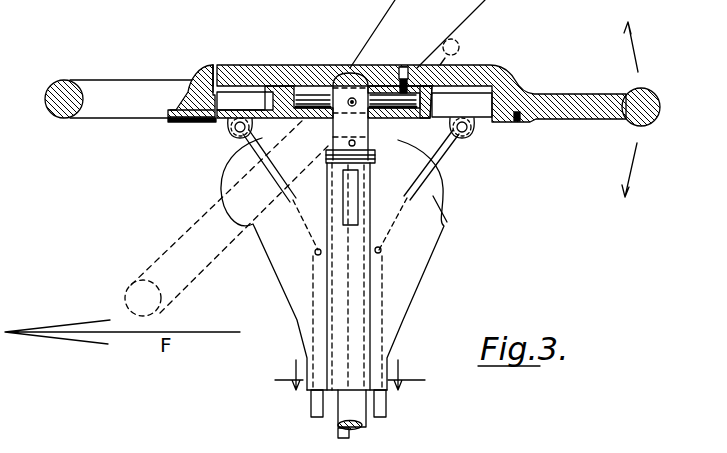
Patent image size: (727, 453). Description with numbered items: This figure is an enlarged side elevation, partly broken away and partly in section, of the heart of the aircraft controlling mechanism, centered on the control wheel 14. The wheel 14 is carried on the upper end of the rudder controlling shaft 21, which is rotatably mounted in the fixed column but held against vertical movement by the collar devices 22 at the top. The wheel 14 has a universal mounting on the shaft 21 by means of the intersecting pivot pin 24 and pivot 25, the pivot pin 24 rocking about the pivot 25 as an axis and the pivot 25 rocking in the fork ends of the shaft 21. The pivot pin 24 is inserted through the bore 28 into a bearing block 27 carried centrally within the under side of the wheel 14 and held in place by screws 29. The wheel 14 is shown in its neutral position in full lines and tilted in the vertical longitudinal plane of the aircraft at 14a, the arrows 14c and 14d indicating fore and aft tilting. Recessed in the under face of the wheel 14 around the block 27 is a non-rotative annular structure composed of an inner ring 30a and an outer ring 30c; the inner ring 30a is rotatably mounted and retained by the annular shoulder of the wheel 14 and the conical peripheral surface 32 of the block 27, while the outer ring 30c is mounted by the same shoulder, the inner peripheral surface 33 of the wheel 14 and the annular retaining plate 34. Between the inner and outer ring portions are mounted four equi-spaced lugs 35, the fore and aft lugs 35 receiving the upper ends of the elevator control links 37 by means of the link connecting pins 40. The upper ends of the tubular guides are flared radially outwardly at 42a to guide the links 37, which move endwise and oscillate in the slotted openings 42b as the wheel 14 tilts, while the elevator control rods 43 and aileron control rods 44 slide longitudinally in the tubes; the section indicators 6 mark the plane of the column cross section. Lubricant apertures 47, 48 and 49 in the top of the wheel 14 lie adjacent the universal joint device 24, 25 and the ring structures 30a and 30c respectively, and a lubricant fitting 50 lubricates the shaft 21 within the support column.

The wheel 14 is at (78, 88).
The wheel tilted in the vertical longitudinal plane 14a is at (138, 280).
The arrow indicating fore and aft tilting 14c is at (636, 60).
The arrow indicating fore and aft tilting 14d is at (630, 178).
The rudder controlling shaft 21 is at (333, 131).
The collar devices 22 is at (376, 160).
The pivot pin 24 is at (298, 66).
The pivot 25 is at (355, 70).
The bearing block 27 is at (404, 66).
The bore 28 is at (432, 96).
The screws 29 is at (442, 56).
The inner ring 30a is at (270, 68).
The outer ring 30c is at (193, 75).
The conical peripheral surface 32 is at (292, 118).
The inner peripheral surface 33 is at (178, 106).
The annular retaining plate 34 is at (192, 124).
The lugs 35 is at (354, 104).
The elevator control links 37 is at (270, 178).
The link connecting pins 40 is at (235, 130).
The flared upper ends of tubular guides 42a is at (266, 278).
The slotted openings 42b is at (418, 198).
The elevator control rods 43 is at (312, 404).
The aileron control rods 44 is at (362, 425).
The lubricant aperture 47 is at (355, 99).
The lubricant aperture 48 is at (283, 66).
The lubricant aperture 49 is at (212, 66).
The lubricant fitting 50 is at (348, 148).
The section line 6- 6 is at (350, 375).